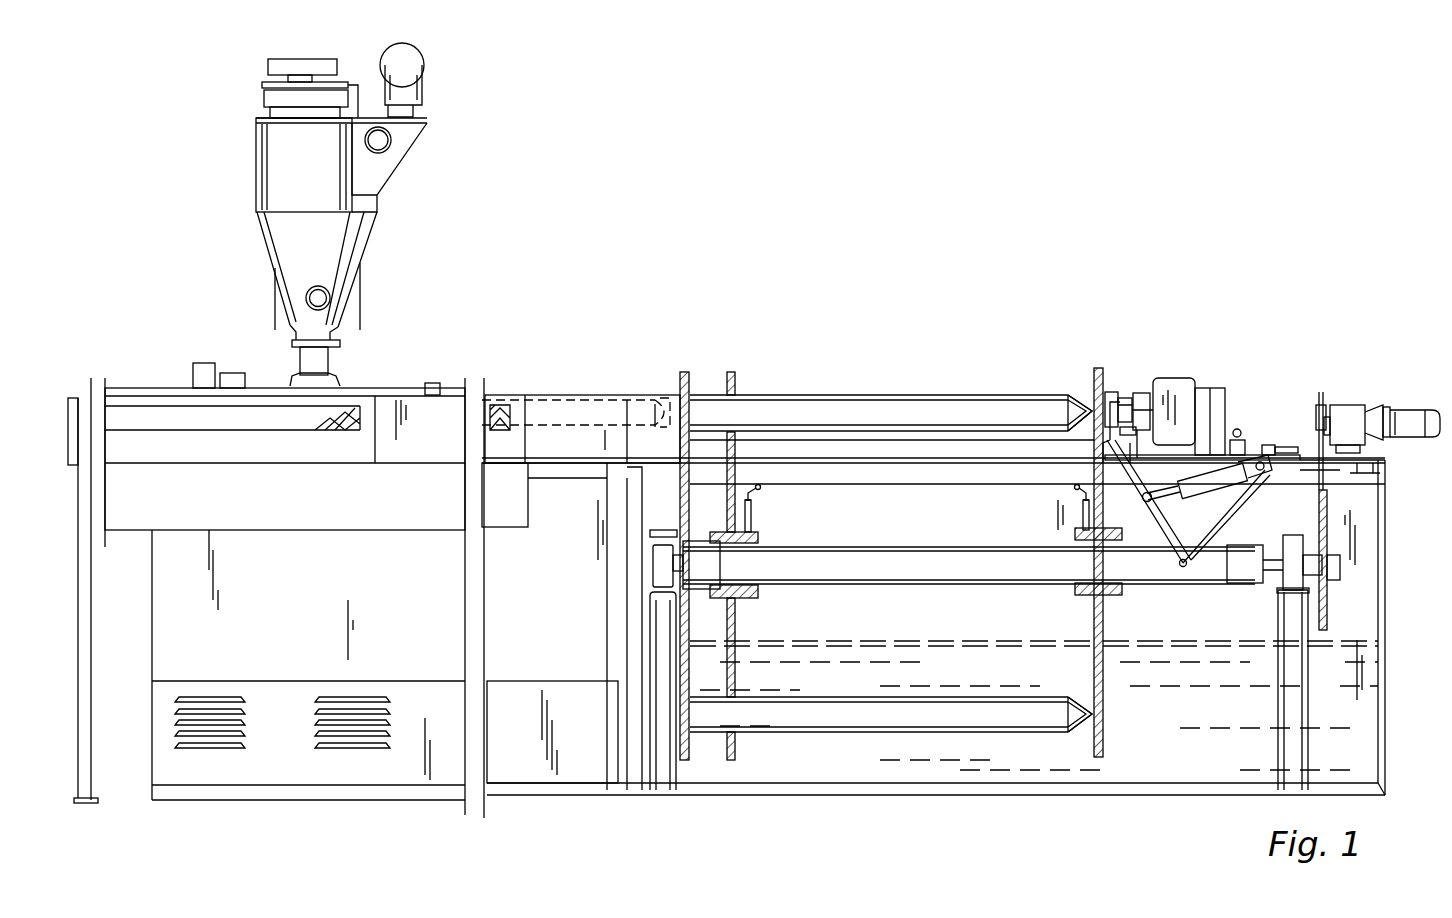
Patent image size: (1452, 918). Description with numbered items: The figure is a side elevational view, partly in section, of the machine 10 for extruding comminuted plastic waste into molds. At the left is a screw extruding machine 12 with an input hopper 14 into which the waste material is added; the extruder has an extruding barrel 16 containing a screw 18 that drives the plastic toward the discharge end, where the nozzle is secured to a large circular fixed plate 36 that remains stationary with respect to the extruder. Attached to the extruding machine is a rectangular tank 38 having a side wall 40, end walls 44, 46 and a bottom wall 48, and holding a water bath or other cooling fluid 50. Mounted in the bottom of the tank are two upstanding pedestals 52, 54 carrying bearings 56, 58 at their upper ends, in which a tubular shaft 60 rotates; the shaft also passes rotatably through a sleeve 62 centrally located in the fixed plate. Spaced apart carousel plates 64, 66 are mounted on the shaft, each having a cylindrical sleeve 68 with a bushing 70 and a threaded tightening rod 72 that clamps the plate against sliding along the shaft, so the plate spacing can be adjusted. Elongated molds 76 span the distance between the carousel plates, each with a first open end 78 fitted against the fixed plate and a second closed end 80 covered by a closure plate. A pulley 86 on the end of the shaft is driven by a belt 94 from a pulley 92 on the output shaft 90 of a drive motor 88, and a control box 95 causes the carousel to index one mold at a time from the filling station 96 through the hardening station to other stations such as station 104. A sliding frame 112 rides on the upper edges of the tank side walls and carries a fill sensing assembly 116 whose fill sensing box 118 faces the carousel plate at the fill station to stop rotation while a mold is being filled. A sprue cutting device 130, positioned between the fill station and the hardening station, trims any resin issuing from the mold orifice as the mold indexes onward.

The machine 10 is at (826, 326).
The screw extruding machine 12 is at (452, 386).
The input hopper 14 is at (374, 246).
The extruding barrel 16 is at (548, 395).
The screw 18 is at (570, 395).
The fixed plate 36 is at (686, 372).
The tank 38 is at (975, 456).
The side wall 40 is at (1040, 525).
The end wall 44 is at (634, 557).
The end wall 46 is at (1385, 569).
The bottom wall 48 is at (1092, 795).
The cooling fluid 50 is at (1122, 640).
The pedestal 52 is at (660, 625).
The pedestal 54 is at (1283, 625).
The bearing 56 is at (660, 577).
The bearing 58 is at (1296, 546).
The tubular shaft 60 is at (984, 590).
The sleeve 62 is at (688, 518).
The carousel plate 64 is at (741, 550).
The carousel plate 66 is at (1097, 376).
The cylindrical sleeve 68 is at (752, 540).
The bushing 70 is at (762, 540).
The tightening rod 72 is at (762, 488).
The elongated mold 76 is at (888, 396).
The first open end 78 is at (712, 392).
The second closed end 80 is at (1086, 398).
The pulley 86 is at (1328, 616).
The drive motor 88 is at (1412, 408).
The output shaft 90 is at (1320, 396).
The pulley 92 is at (1316, 415).
The belt 94 is at (1322, 486).
The control box 95 is at (1348, 406).
The filling station 96 is at (1022, 370).
The station 104 is at (1078, 736).
The sliding frame 112 is at (1214, 386).
The fill sensing assembly 116 is at (1165, 386).
The fill sensing box 118 is at (1110, 388).
The sprue cutting device 130 is at (1238, 503).